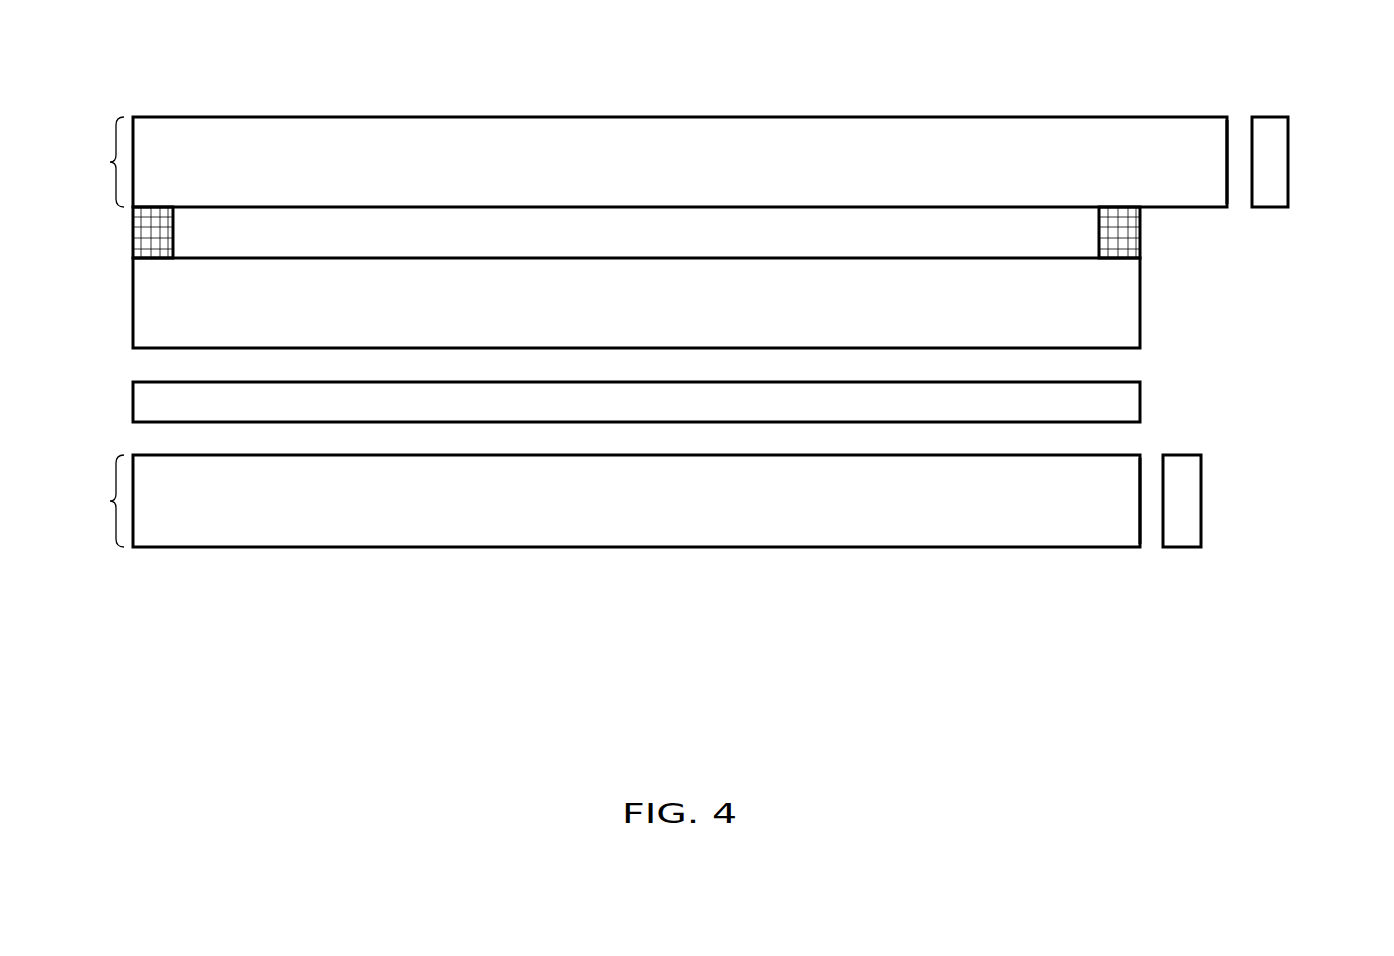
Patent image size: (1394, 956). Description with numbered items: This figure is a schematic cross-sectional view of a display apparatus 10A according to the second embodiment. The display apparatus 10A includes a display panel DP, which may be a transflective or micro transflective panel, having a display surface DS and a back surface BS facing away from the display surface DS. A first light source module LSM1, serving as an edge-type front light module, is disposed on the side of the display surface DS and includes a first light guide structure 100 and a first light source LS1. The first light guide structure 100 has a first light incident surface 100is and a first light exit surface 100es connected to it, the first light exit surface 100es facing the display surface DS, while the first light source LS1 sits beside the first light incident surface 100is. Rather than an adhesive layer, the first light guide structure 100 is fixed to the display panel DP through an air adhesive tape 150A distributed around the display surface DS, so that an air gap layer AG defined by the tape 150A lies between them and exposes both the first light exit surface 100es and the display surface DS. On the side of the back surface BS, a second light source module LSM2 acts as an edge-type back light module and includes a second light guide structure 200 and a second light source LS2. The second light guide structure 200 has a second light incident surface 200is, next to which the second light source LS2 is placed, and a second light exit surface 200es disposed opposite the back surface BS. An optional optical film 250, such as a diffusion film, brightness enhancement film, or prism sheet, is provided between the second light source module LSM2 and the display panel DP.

The first light guide structure 100 is at (581, 158).
The air gap layer AG is at (730, 229).
The first light incident surface 100is is at (1236, 147).
The first light source LS1 is at (1270, 165).
The first light source module LSM1 is at (82, 162).
The air adhesive (tape) 150A is at (156, 240).
The first light exit surface 100es is at (218, 214).
The display surface DS is at (1082, 250).
The display panel DP is at (1100, 312).
The back surface BS is at (1084, 354).
The optical film 250 is at (166, 407).
The second light exit surface 200es is at (219, 446).
The second light guide structure 200 is at (635, 495).
The second light source module LSM2 is at (82, 501).
The second light source LS2 is at (1185, 505).
The second light incident surface 200is is at (1149, 518).
The display apparatus 10A is at (1332, 687).